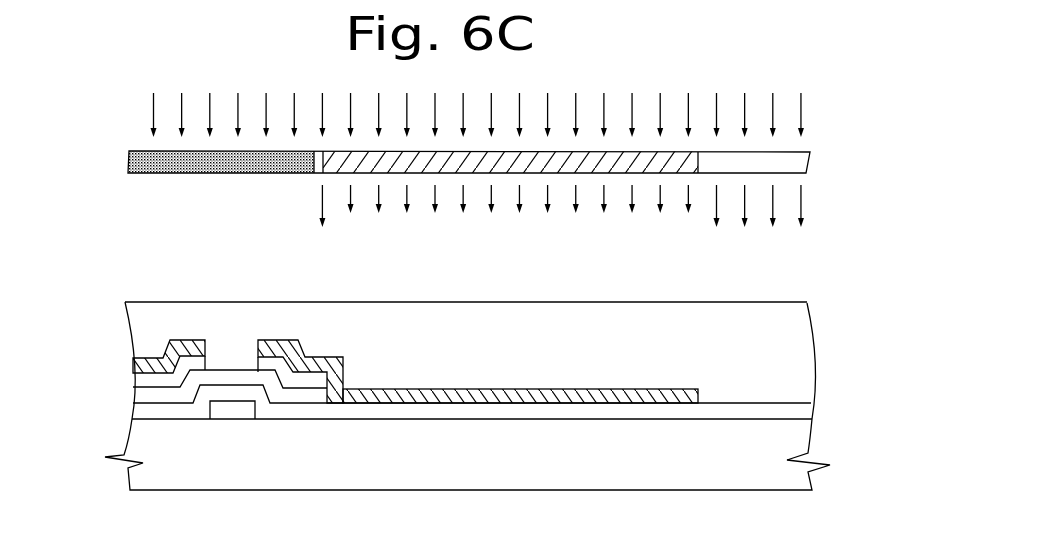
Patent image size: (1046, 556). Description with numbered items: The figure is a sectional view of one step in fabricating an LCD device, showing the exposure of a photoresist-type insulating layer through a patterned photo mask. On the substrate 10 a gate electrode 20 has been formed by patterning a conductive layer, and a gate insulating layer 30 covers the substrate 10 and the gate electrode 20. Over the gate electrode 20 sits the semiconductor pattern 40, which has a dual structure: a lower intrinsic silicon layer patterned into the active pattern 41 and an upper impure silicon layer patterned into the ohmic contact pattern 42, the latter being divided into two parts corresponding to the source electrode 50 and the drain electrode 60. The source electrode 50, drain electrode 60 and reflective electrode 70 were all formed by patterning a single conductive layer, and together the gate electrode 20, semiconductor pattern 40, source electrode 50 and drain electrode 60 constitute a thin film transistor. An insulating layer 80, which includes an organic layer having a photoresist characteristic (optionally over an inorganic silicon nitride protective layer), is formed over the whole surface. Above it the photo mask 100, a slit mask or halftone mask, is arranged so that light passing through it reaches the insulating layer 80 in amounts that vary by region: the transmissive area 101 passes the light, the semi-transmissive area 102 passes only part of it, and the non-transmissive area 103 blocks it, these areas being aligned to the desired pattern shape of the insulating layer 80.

The substrate 10 is at (137, 477).
The gate electrode 20 is at (230, 413).
The gate insulating layer 30 is at (133, 413).
The semiconductor pattern 40 is at (172, 331).
The active pattern 41 is at (143, 397).
The ohmic contact pattern 42 is at (143, 378).
The source electrode 50 is at (191, 340).
The drain electrode 60 is at (320, 360).
The reflective electrode 70 is at (507, 389).
The insulating layer 80 is at (145, 327).
The photo mask 100 is at (507, 207).
The transmissive area 101 is at (318, 173).
The semi-transmissive area 102 is at (445, 174).
The non-transmissive area 103 is at (190, 174).